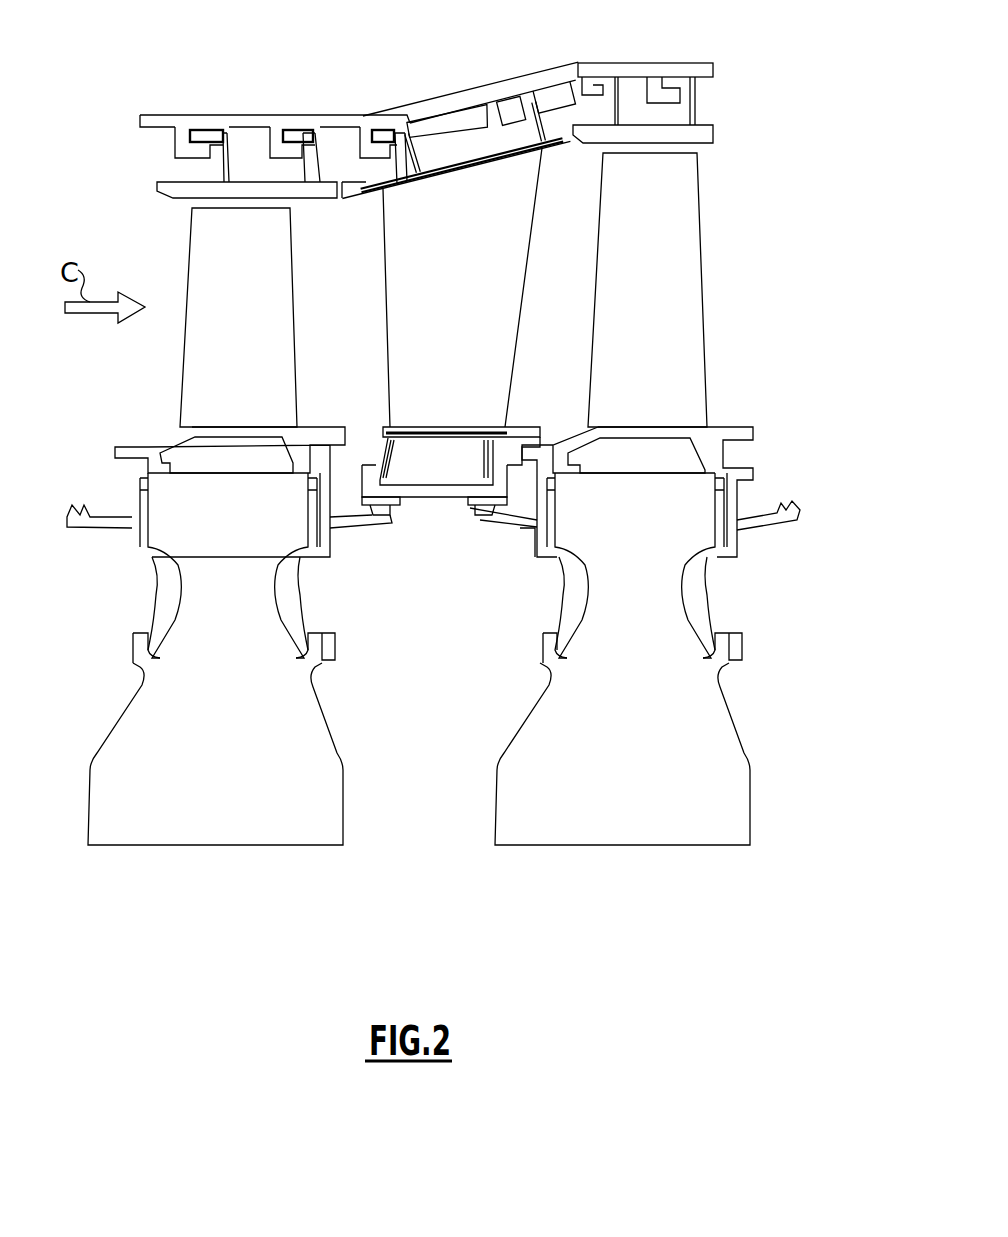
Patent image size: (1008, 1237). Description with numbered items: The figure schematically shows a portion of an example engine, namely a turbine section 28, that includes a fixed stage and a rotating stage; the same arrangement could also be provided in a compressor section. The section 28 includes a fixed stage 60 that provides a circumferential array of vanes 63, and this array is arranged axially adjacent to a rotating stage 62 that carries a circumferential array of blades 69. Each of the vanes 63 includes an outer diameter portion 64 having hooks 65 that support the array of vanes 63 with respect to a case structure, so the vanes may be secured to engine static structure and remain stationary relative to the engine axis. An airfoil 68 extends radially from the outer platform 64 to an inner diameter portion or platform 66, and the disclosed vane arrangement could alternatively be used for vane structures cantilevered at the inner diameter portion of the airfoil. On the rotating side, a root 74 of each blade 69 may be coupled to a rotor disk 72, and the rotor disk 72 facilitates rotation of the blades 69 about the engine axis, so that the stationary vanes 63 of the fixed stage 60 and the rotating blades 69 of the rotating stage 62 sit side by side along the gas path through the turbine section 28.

The turbine section 28 is at (786, 61).
The fixed stage 60 is at (431, 482).
The rotating stage 62 is at (693, 519).
The vanes 63 is at (528, 252).
The outer diameter portion 64 is at (463, 158).
The hooks 65 is at (383, 137).
The inner diameter portion 66 is at (375, 440).
The airfoil 68 is at (420, 280).
The blades 69 is at (685, 268).
The rotor disk 72 is at (663, 653).
The root 74 is at (683, 470).